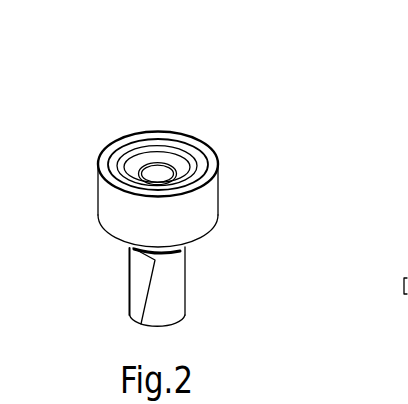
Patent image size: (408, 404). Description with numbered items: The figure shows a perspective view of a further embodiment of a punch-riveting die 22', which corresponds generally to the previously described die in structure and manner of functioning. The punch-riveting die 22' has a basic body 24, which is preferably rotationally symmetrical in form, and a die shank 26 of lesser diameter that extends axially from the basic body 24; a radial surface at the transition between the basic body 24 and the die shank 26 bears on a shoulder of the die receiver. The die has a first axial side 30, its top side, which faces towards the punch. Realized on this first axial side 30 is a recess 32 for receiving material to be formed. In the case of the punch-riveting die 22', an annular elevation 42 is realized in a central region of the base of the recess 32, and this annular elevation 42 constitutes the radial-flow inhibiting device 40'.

The punch-riveting die 22' is at (211, 171).
The basic body 24 is at (198, 205).
The die shank 26 is at (179, 292).
The first axial side 30 is at (113, 159).
The recess 32 is at (147, 150).
The radial-flow inhibiting device 40' is at (208, 116).
The annular elevation 42 is at (115, 170).